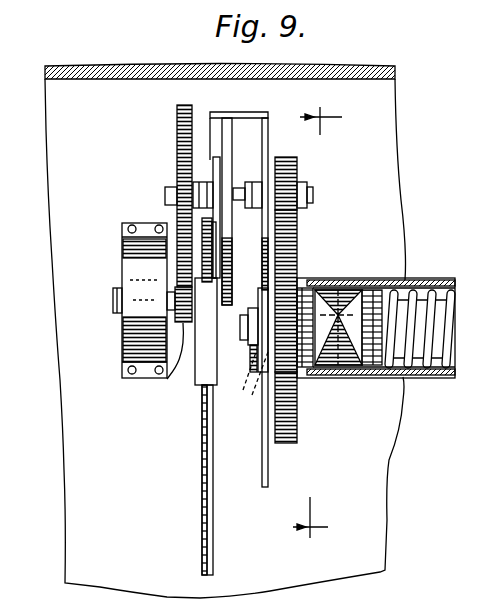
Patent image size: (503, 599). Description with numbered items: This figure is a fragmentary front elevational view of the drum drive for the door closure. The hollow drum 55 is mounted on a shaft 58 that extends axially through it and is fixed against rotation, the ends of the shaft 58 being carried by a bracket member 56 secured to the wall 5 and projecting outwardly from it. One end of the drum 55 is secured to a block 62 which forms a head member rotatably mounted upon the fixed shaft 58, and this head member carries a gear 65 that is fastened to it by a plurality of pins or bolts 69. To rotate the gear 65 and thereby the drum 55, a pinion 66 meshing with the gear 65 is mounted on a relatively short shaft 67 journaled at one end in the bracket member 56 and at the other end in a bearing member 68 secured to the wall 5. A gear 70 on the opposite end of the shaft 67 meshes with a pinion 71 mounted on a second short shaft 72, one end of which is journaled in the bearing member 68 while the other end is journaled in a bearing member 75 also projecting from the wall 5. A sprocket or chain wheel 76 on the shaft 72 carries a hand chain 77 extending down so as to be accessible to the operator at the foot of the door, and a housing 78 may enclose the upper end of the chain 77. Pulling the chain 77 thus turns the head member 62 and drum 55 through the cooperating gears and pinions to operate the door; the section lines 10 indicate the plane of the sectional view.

The wall 5 is at (133, 81).
The section line 10 is at (317, 324).
The drum 55 is at (425, 377).
The bracket member 56 is at (265, 163).
The shaft 58 is at (445, 283).
The block 62 is at (333, 377).
The gear 65 is at (293, 423).
The pinion 66 is at (287, 185).
The shaft 67 is at (312, 202).
The bearing member 68 is at (240, 100).
The pins or bolts 69 is at (246, 385).
The gear 70 is at (182, 143).
The pinion 71 is at (167, 379).
The shaft 72 is at (170, 297).
The bearing member 75 is at (137, 330).
The sprocket or chain wheel 76 is at (205, 237).
The hand chain 77 is at (203, 487).
The housing 78 is at (203, 385).